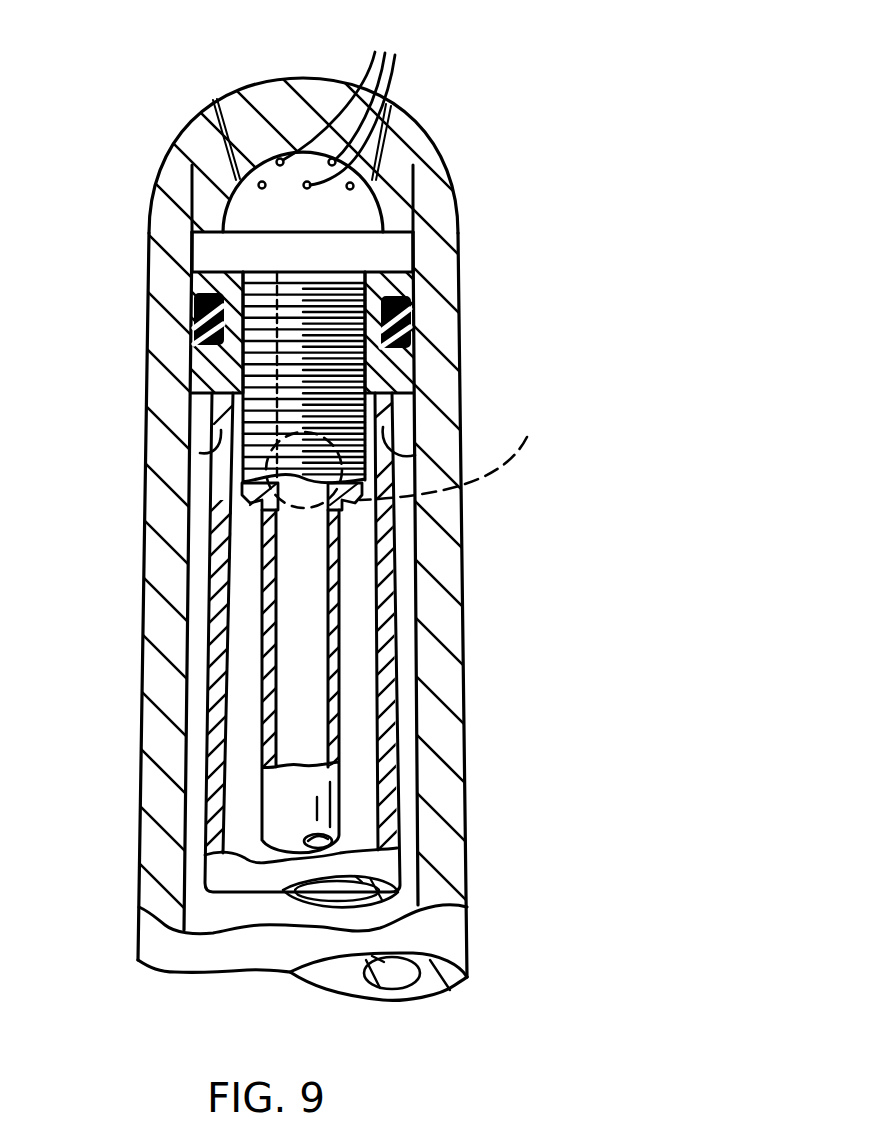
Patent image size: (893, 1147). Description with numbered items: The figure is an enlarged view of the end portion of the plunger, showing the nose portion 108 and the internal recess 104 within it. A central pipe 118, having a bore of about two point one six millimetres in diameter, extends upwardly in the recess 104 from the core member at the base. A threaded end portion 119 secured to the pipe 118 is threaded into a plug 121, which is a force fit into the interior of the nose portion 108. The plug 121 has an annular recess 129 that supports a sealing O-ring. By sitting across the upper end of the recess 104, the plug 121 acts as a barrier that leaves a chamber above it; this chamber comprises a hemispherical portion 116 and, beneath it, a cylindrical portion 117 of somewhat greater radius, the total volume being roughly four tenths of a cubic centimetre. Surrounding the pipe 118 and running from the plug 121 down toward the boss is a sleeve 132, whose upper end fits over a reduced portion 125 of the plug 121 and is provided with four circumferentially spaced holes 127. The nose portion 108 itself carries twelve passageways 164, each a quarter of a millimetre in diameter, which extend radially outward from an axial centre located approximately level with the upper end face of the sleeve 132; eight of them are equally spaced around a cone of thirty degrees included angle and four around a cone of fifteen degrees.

The recess 104 is at (420, 645).
The nose portion 108 is at (197, 121).
The hemispherical portion 116 is at (360, 215).
The cylindrical portion 117 is at (400, 252).
The central pipe 118 is at (333, 563).
The threaded end portion 119 is at (247, 500).
The plug 121 is at (400, 370).
The reduced portion 125 is at (205, 403).
The circumferentially spaced holes 127 is at (415, 455).
The annular recess 129 is at (412, 312).
The sleeve 132 is at (390, 714).
The passageways 164 is at (325, 96).